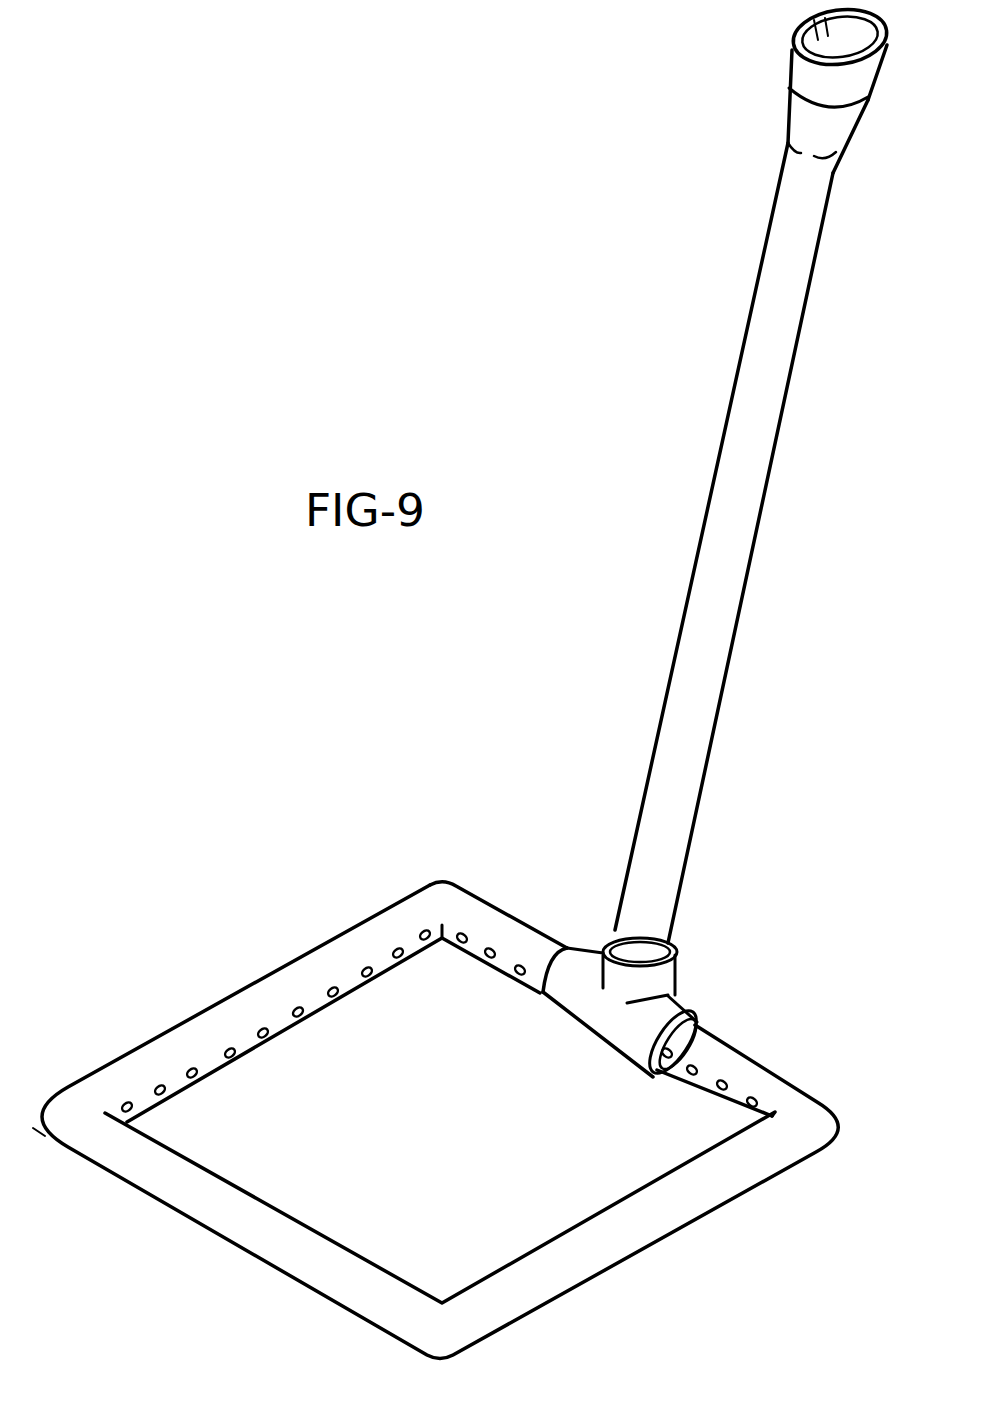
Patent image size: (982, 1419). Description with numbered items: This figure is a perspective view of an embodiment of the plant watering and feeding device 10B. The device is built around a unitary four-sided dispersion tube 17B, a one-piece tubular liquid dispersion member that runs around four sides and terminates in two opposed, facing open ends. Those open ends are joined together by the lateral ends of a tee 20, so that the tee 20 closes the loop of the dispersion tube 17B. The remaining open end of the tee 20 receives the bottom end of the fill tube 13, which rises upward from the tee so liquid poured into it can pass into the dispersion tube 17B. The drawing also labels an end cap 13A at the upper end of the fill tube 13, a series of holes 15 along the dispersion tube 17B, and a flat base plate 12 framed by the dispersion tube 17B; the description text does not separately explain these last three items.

The plant watering and feeding device 10B is at (558, 689).
The base plate 12 is at (466, 1147).
The fill tube 13 is at (771, 520).
The pole end cap 13A is at (790, 70).
The holes 15 is at (196, 1077).
The unitary four-sided dispersion tube 17B is at (267, 988).
The tee 20 is at (675, 980).